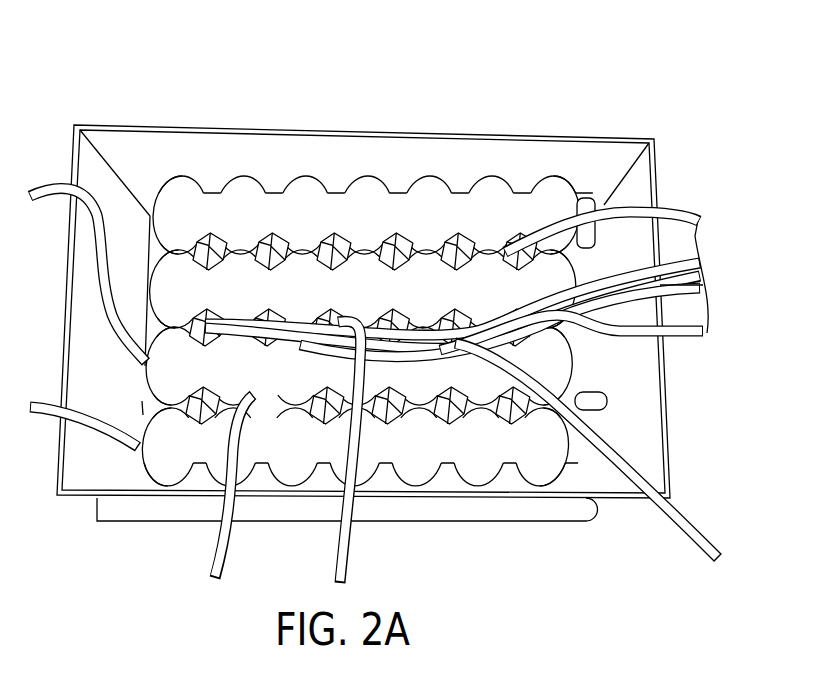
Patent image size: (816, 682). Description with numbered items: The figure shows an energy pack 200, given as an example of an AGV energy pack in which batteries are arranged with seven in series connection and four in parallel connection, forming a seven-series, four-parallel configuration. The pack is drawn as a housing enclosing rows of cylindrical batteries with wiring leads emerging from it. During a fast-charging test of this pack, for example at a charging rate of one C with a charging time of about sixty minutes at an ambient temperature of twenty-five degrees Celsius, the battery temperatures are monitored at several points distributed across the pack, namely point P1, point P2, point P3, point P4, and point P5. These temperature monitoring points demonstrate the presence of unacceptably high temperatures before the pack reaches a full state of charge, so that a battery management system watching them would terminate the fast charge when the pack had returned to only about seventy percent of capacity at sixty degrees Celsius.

The energy pack 200 is at (80, 68).
The point P1 is at (88, 317).
The point P2 is at (248, 475).
The point P3 is at (341, 424).
The point P4 is at (570, 414).
The point P5 is at (602, 217).